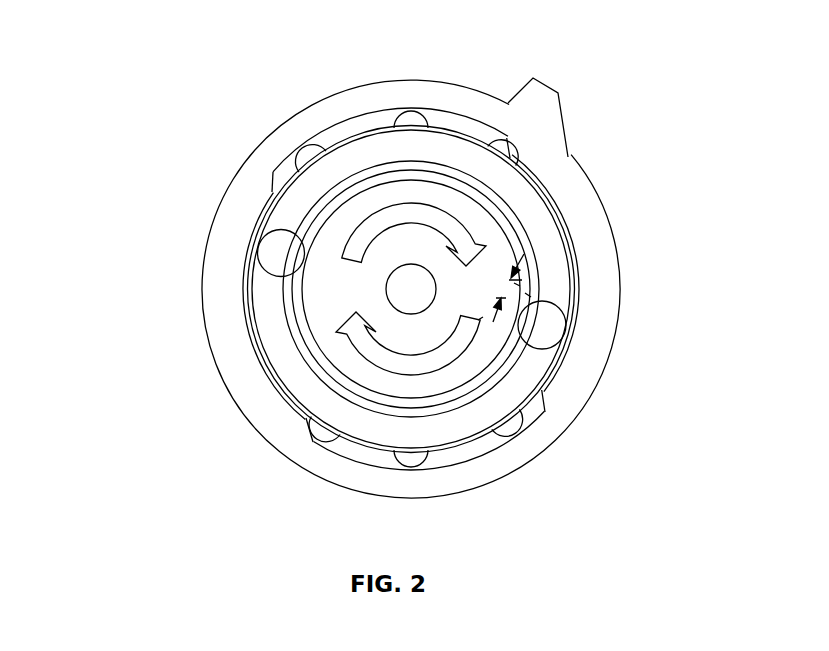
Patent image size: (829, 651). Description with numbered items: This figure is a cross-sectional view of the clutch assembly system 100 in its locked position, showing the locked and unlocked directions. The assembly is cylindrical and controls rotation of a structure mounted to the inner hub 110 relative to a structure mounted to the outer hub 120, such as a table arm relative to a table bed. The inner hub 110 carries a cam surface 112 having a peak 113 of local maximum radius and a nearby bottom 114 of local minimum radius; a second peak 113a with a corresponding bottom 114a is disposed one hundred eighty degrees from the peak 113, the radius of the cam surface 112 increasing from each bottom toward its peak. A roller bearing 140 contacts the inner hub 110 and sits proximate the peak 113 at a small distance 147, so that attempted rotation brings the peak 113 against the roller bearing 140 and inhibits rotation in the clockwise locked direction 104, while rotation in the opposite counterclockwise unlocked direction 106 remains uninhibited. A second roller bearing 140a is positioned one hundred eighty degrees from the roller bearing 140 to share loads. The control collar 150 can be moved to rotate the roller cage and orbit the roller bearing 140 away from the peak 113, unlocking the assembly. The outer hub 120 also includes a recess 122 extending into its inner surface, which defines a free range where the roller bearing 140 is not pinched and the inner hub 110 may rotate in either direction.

The clutch assembly system 100 is at (132, 100).
The outer hub 120 is at (240, 187).
The recess 122 is at (334, 460).
The control collar 150 is at (508, 157).
The locked direction 104 is at (478, 210).
The unlocked direction 106 is at (476, 365).
The inner hub 110 is at (495, 238).
The cam surface 112 is at (500, 173).
The peak 113 is at (575, 330).
The peak 113a is at (284, 279).
The bottom 114 is at (437, 392).
The bottom 114a is at (380, 187).
The roller bearing 140 is at (560, 318).
The second roller bearing 140a is at (270, 260).
The distance 147 is at (522, 273).